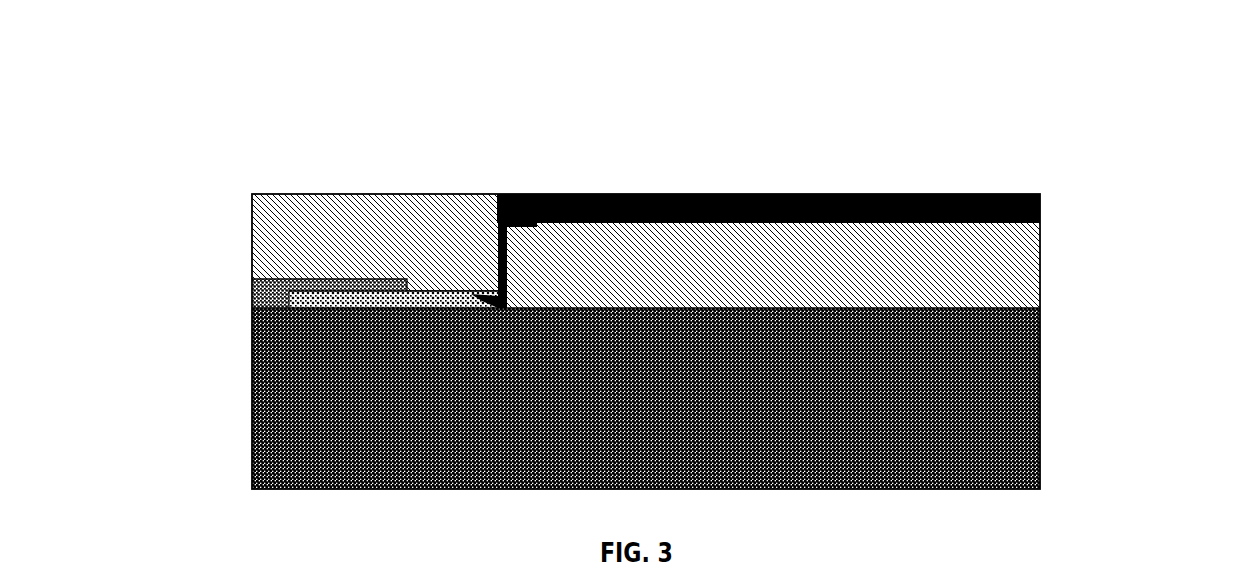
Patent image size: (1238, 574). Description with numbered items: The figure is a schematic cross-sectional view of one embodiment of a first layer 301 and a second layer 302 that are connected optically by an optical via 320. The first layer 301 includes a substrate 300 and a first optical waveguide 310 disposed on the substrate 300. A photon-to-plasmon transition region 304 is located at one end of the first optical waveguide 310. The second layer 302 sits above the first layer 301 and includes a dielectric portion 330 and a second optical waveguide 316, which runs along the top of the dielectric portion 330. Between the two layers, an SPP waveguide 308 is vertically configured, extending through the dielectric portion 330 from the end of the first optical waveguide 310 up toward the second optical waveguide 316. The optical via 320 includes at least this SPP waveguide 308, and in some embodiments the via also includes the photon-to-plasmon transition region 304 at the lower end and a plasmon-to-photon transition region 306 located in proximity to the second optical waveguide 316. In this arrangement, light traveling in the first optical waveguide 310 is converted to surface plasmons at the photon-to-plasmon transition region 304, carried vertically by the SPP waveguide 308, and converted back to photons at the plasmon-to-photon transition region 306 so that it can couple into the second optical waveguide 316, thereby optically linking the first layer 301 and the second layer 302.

The substrate 300 is at (646, 398).
The first layer 301 is at (540, 385).
The second layer 302 is at (636, 165).
The photon-to-plasmon transition region 304 is at (474, 296).
The plasmon-to-photon transition region 306 is at (496, 200).
The SPP waveguide 308 is at (509, 277).
The first optical waveguide 310 is at (280, 278).
The second optical waveguide 316 is at (867, 197).
The optical via 320 is at (459, 180).
The dielectric portion 330 is at (646, 251).